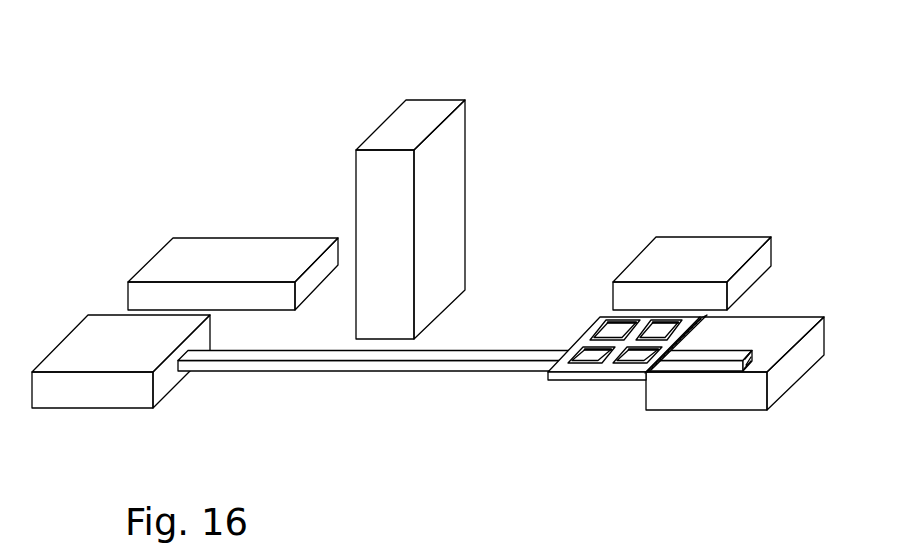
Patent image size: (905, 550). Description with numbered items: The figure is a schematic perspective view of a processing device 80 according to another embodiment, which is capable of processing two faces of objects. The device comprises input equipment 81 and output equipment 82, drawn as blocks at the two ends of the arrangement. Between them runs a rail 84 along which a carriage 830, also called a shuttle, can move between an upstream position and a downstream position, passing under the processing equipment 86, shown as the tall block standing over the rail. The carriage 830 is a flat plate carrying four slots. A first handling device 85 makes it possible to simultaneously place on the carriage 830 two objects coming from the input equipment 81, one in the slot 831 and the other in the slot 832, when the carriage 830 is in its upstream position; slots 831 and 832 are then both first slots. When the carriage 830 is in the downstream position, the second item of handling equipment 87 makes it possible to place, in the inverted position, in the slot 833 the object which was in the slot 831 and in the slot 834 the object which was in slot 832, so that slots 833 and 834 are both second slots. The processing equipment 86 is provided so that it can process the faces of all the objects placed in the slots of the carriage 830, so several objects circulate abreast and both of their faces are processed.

The processing device 80 is at (184, 125).
The input equipment 81 is at (780, 343).
The output equipment 82 is at (103, 345).
The rail 84 is at (337, 363).
The first handling device 85 is at (710, 253).
The processing equipment 86 is at (427, 110).
The second item of handling equipment 87 is at (188, 253).
The carriage 830 is at (589, 416).
The slot 831 is at (628, 357).
The slot 832 is at (657, 333).
The slot 833 is at (590, 353).
The slot 834 is at (598, 337).